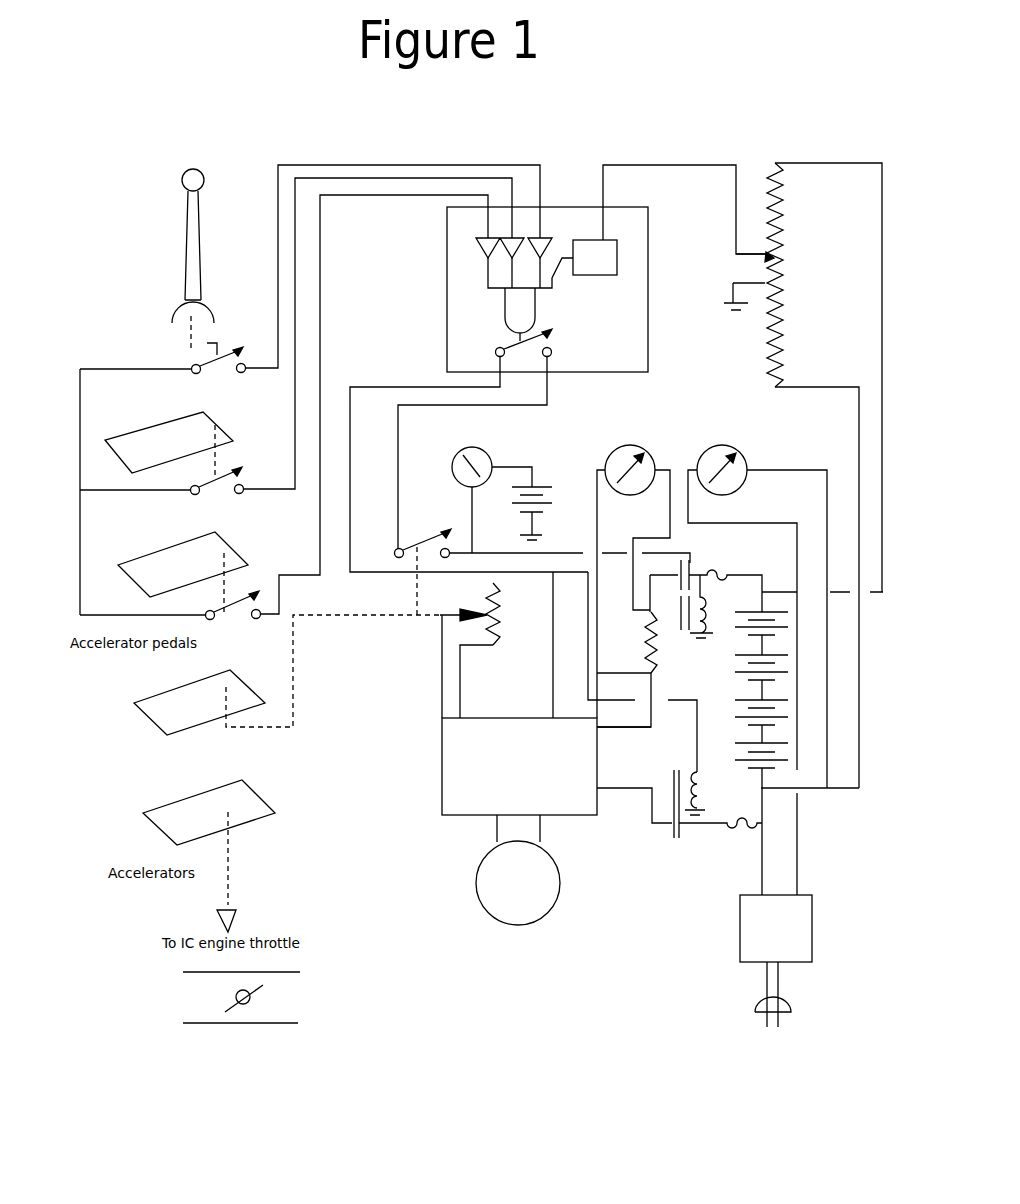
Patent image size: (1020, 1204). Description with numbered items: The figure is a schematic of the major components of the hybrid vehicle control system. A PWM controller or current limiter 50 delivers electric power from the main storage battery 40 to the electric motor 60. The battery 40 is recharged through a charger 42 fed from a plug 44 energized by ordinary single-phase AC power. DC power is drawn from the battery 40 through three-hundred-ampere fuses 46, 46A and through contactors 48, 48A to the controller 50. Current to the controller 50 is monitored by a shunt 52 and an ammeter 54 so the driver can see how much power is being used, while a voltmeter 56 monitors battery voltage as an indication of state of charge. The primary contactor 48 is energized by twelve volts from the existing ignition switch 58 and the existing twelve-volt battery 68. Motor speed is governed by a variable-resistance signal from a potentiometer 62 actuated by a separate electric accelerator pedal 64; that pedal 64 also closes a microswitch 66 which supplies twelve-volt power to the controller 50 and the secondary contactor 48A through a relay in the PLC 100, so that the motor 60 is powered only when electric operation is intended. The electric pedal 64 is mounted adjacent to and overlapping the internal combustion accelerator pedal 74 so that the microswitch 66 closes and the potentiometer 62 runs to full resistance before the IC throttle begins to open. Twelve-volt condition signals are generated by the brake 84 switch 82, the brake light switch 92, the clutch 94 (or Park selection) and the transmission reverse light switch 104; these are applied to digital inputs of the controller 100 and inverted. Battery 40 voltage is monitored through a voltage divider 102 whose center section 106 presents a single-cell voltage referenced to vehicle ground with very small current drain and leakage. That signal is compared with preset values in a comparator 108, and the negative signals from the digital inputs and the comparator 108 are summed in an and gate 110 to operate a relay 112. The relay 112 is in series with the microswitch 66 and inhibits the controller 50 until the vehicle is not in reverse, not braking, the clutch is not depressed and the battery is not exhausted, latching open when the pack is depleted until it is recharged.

The transmission reverse light switch 104 is at (205, 360).
The clutch 94 is at (181, 433).
The brake light switch 92 is at (210, 472).
The brake pedal 84 is at (183, 562).
The switch 82 is at (225, 603).
The electric accelerator pedal 64 is at (273, 641).
The internal combustion accelerator pedal 74 is at (186, 805).
The PLC 100 is at (562, 368).
The comparator 108 is at (617, 240).
The and gate 110 is at (525, 310).
The relay 112 is at (553, 347).
The voltage divider 102 is at (778, 210).
The center section of voltage divider 106 is at (779, 264).
The ignition switch 58 is at (478, 445).
The 12 V battery 68 is at (542, 480).
The ammeter 54 is at (627, 440).
The voltmeter 56 is at (723, 440).
The microswitch 66 is at (529, 544).
The potentiometer 62 is at (505, 618).
The shunt 52 is at (648, 628).
The primary contactor 48 is at (691, 560).
The fuse 46 is at (727, 572).
The storage battery 40 is at (760, 697).
The PWM controller 50 is at (557, 770).
The electric motor 60 is at (518, 870).
The secondary contactor 48A is at (668, 808).
The fuse 46A is at (737, 820).
The charger 42 is at (776, 928).
The plug 44 is at (782, 1002).